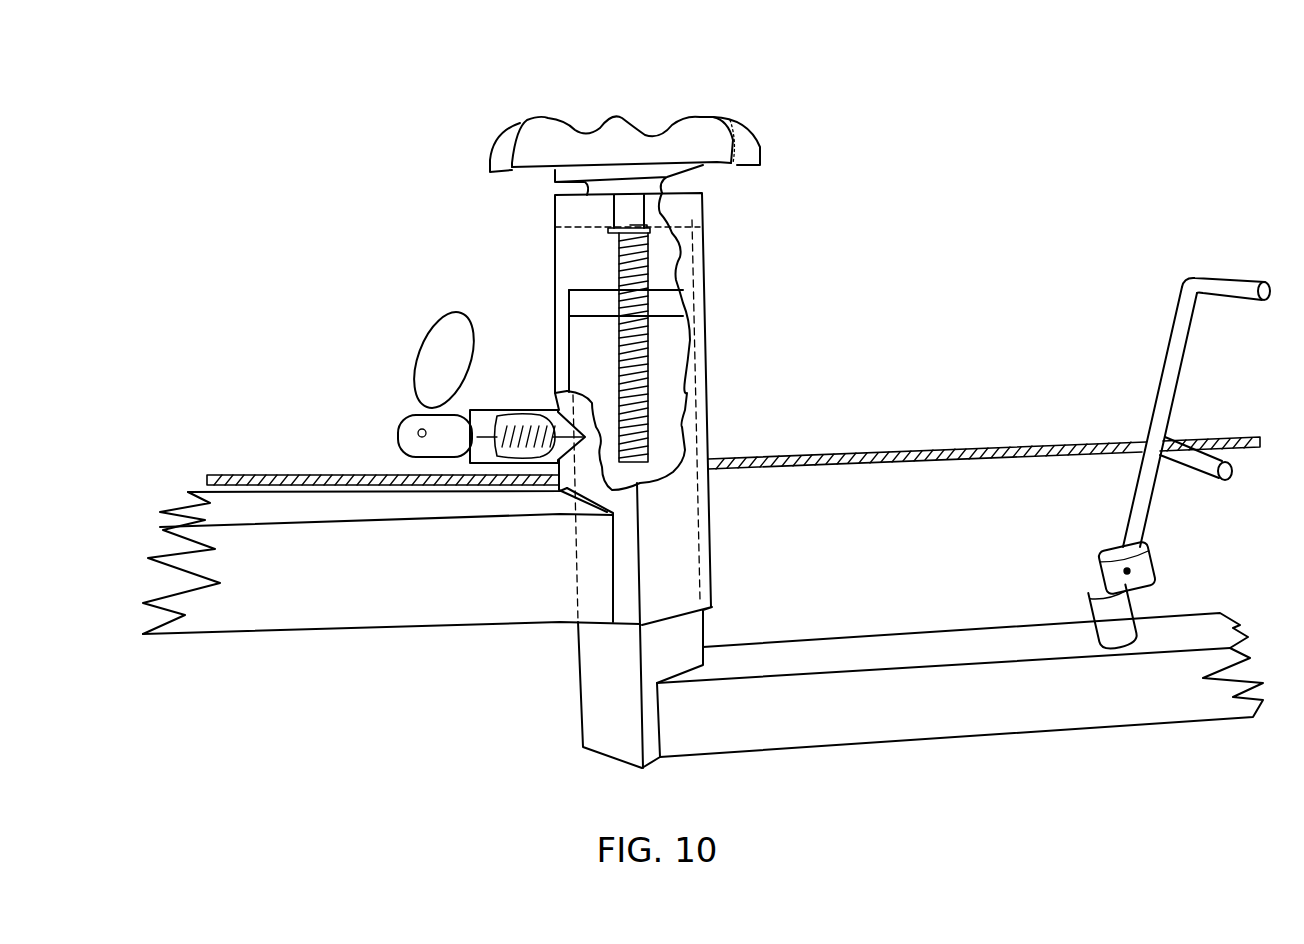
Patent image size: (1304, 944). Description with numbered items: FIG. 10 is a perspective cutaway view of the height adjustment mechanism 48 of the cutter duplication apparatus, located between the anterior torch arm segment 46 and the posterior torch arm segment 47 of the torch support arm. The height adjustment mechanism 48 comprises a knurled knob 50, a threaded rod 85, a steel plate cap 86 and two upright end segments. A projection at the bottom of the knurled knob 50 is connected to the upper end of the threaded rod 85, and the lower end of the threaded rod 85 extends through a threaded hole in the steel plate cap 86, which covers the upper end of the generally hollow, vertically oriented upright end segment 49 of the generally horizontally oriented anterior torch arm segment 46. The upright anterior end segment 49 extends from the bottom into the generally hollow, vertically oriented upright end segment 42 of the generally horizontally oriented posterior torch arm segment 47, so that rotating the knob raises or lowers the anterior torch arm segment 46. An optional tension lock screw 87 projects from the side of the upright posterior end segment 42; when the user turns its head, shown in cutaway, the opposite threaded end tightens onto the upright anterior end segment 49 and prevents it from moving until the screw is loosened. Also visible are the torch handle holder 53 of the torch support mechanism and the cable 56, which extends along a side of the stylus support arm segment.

The upright end segment of the posterior torch arm segment 42 is at (552, 268).
The anterior torch arm segment 46 is at (848, 719).
The posterior torch arm segment 47 is at (323, 597).
The height adjustment mechanism 48 is at (742, 565).
The upright end segment of the anterior torch arm segment 49 is at (555, 338).
The knurled knob 50 is at (567, 137).
The torch handle holder 53 is at (1188, 303).
The cable 56 is at (993, 448).
The threaded rod 85 is at (642, 258).
The steel plate cap 86 is at (647, 303).
The tension lock screw 87 is at (433, 417).